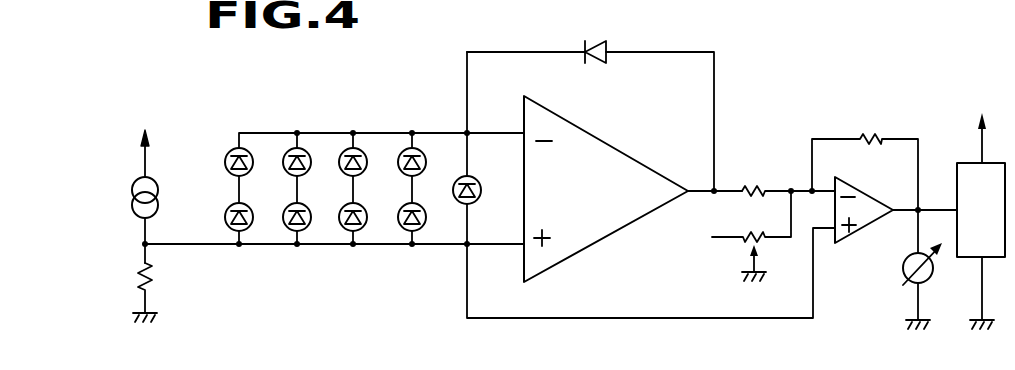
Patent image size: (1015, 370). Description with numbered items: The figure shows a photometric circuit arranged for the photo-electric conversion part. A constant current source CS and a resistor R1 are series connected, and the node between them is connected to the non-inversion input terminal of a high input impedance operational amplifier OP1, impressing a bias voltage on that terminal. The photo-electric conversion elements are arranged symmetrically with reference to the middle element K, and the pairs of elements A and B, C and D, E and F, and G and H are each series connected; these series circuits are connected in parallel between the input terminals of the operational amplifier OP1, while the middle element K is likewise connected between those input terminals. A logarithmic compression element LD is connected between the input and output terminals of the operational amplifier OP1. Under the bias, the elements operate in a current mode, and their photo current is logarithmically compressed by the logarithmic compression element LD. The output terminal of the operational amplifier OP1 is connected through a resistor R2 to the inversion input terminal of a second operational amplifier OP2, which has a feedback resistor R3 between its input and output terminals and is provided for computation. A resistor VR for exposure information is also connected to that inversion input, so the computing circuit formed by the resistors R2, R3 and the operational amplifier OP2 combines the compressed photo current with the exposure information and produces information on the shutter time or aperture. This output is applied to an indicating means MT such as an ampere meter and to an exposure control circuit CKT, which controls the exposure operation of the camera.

The constant current source CS is at (137, 181).
The resistor R1 is at (157, 281).
The photo-electric conversion element G is at (252, 167).
The photo-electric conversion element H is at (252, 212).
The photo-electric conversion element E is at (310, 167).
The photo-electric conversion element F is at (310, 212).
The photo-electric conversion element C is at (366, 165).
The photo-electric conversion element D is at (366, 212).
The photo-electric conversion element A is at (425, 165).
The photo-electric conversion element B is at (425, 212).
The middle element K is at (479, 182).
The logarithmic compression element LD is at (600, 42).
The operational amplifier OP1 is at (617, 148).
The operational amplifier OP2 is at (874, 198).
The resistor R2 is at (750, 182).
The feedback resistor R3 is at (868, 132).
The resistor for exposure information VR is at (739, 244).
The indicating means MT is at (902, 268).
The exposure control circuit CKT is at (981, 221).